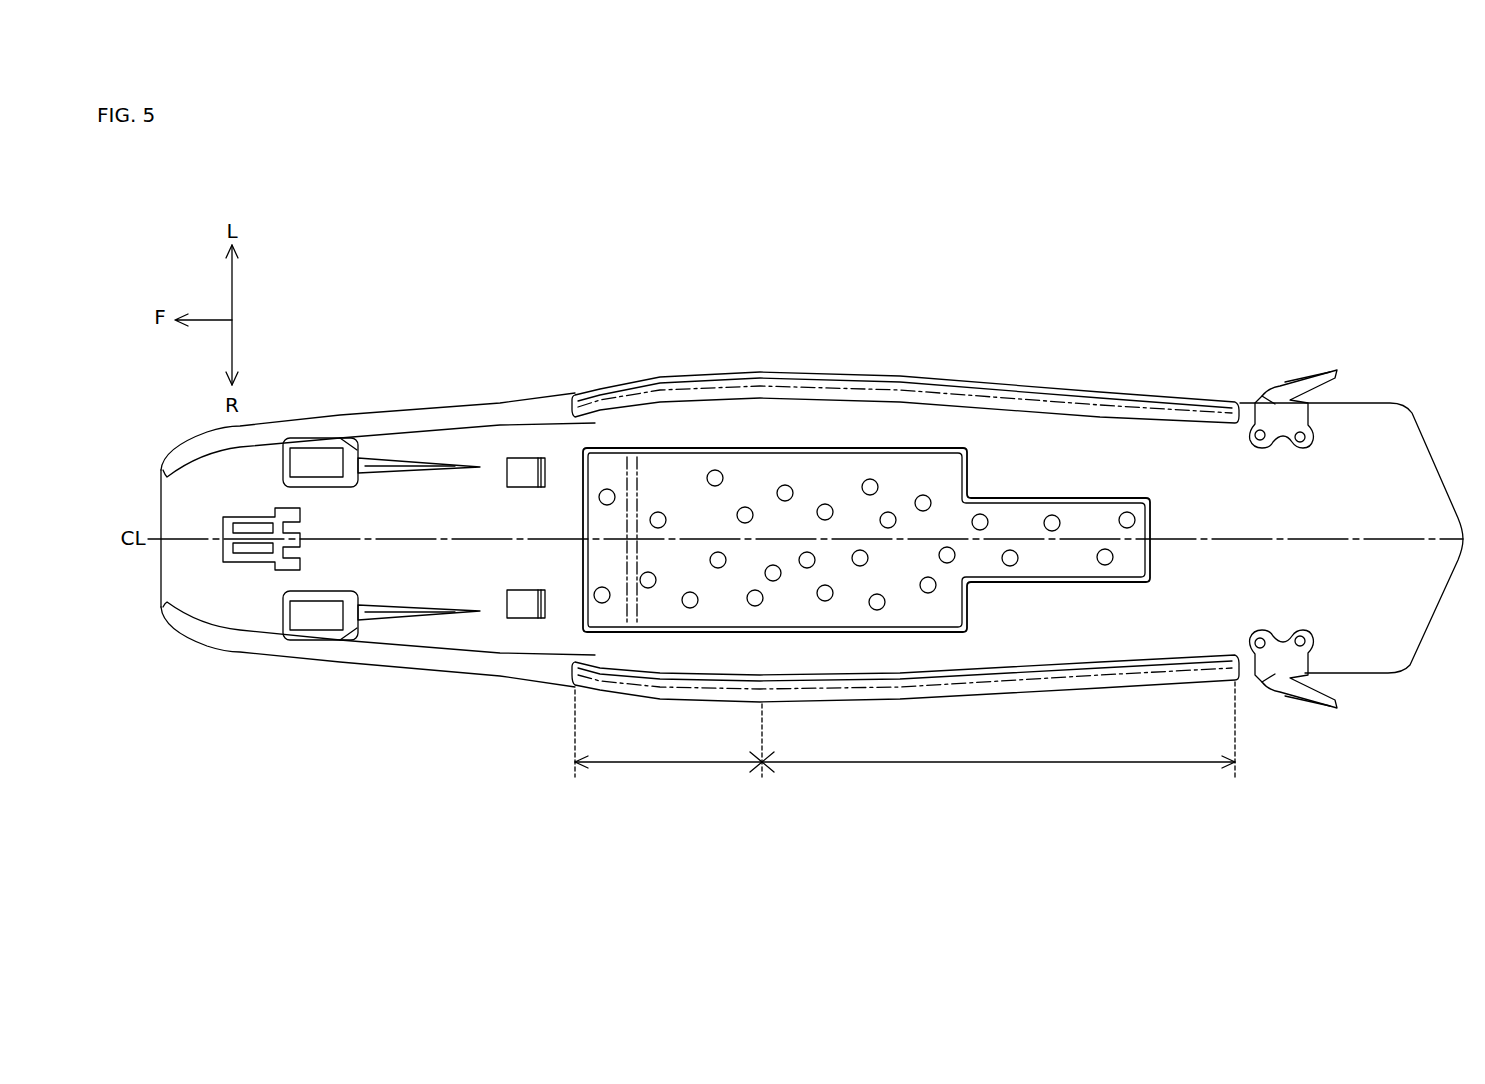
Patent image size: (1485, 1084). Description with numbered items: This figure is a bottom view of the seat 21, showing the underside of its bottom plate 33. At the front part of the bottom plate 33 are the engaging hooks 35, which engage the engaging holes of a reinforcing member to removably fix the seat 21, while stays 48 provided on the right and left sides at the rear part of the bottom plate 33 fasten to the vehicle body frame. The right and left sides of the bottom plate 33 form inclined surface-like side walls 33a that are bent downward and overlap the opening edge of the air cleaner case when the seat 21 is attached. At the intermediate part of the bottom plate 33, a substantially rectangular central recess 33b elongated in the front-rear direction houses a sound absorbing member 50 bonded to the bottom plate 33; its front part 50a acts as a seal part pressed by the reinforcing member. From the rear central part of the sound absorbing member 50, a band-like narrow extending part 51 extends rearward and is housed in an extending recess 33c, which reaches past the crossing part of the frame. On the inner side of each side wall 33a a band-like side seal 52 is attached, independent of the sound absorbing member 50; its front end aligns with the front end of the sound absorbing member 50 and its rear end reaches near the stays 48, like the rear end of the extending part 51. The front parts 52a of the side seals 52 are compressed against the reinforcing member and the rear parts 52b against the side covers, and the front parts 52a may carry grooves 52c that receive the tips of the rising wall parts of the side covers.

The seat 21 is at (1139, 374).
The bottom plate 33 is at (445, 497).
The side walls 33a is at (653, 377).
The central recess 33b is at (846, 606).
The extending recess 33c is at (1040, 560).
The engaging hooks 35 is at (517, 460).
The stays 48 is at (1320, 368).
The sound absorbing member 50 is at (844, 476).
The front part of the sound absorbing member 50a is at (613, 482).
The extending part 51 is at (1078, 517).
The side seal 52 is at (905, 534).
The front parts of the side seals 52a is at (674, 740).
The rear parts of the side seals 52b is at (998, 736).
The grooves 52c is at (998, 395).